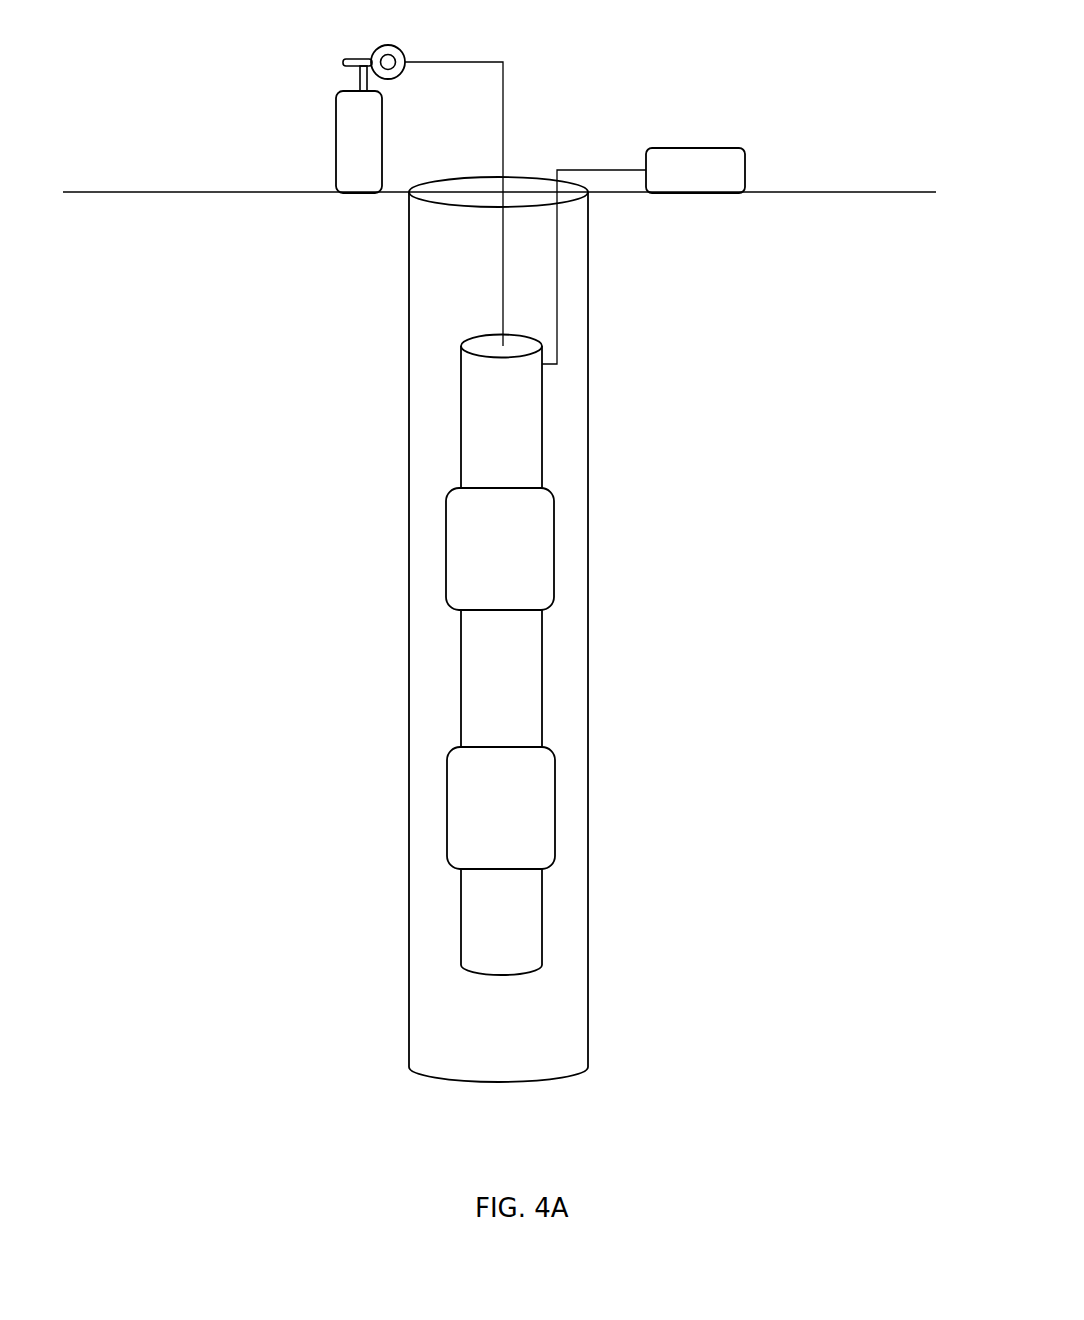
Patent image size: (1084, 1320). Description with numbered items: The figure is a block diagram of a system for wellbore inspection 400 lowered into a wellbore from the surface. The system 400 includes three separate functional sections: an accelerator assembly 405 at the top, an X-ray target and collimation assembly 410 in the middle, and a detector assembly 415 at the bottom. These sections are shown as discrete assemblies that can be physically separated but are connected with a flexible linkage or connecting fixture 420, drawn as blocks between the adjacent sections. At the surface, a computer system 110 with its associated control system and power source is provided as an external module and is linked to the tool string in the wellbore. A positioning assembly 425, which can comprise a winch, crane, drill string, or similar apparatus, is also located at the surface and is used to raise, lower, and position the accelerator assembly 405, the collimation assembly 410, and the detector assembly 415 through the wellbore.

The system for wellbore inspection 400 is at (735, 93).
The positioning assembly 425 is at (326, 100).
The computer system 110 is at (740, 185).
The accelerator assembly 405 is at (542, 403).
The X-ray target and collimation assembly 410 is at (537, 690).
The detector assembly 415 is at (541, 933).
The flexible linkage or connecting fixture 420 is at (546, 553).